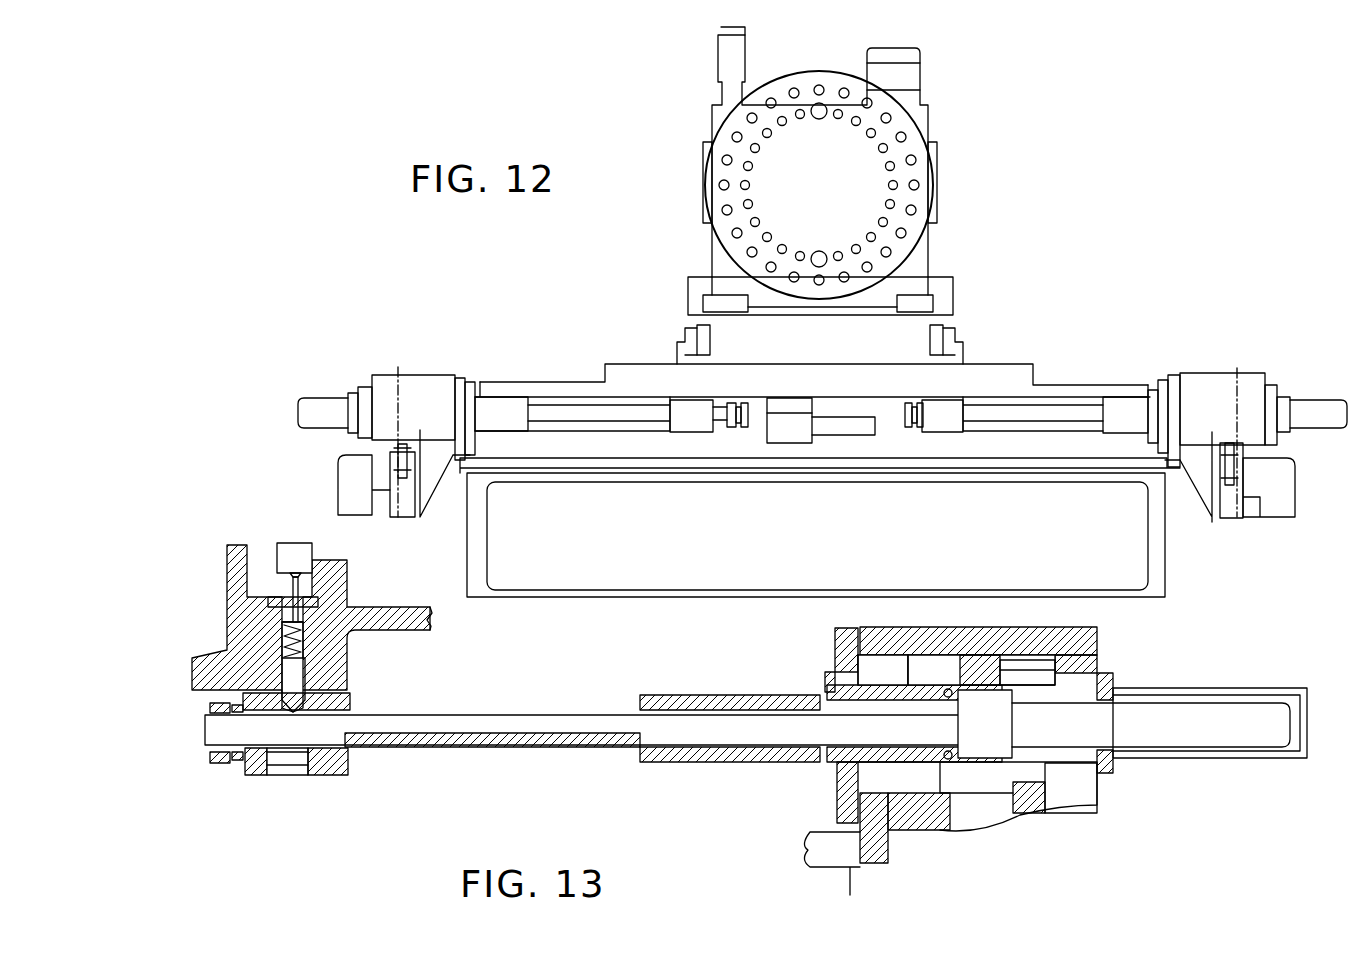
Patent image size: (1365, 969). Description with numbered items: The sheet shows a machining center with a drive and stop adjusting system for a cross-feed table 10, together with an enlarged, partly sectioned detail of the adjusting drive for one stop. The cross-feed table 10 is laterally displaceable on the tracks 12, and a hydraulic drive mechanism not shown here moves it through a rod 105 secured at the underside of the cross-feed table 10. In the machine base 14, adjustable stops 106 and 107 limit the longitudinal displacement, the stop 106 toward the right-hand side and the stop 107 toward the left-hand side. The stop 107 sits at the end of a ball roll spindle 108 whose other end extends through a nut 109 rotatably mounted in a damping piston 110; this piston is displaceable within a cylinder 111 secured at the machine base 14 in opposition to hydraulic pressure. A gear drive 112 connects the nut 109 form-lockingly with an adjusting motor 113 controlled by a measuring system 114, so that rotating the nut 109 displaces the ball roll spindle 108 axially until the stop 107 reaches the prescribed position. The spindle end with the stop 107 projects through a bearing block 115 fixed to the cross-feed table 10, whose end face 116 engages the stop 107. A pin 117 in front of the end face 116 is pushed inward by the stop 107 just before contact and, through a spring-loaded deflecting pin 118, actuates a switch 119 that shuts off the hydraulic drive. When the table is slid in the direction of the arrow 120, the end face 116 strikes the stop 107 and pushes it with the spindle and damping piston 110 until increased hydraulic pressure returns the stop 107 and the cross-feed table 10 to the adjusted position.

In FIG. 12, the cross-feed table 10 is at (912, 345).
In FIG. 13, the cross-feed table 10 is at (342, 623).
In FIG. 12, the tracks 12 is at (535, 385).
In FIG. 12, the machine base 14 is at (1133, 585).
In FIG. 13, the machine base 14 is at (833, 855).
In FIG. 12, the rod 105 is at (818, 437).
In FIG. 12, the stop 106 is at (910, 428).
In FIG. 12, the stop 107 is at (736, 432).
In FIG. 13, the stop 107 is at (220, 765).
In FIG. 13, the ball roll spindle 108 is at (745, 733).
In FIG. 13, the nut 109 is at (995, 745).
In FIG. 13, the damping piston 110 is at (915, 680).
In FIG. 13, the cylinder 111 is at (990, 640).
In FIG. 13, the gear drive 112 is at (1030, 803).
In FIG. 12, the adjusting motor 113 is at (382, 495).
In FIG. 12, the measuring system 114 is at (358, 500).
In FIG. 12, the bearing block 115 is at (682, 432).
In FIG. 13, the bearing block 115 is at (338, 773).
In FIG. 13, the end face 116 is at (250, 775).
In FIG. 13, the pin 117 is at (258, 703).
In FIG. 13, the deflecting pin 118 is at (305, 673).
In FIG. 13, the switch 119 is at (298, 558).
In FIG. 13, the arrow 120 is at (315, 513).